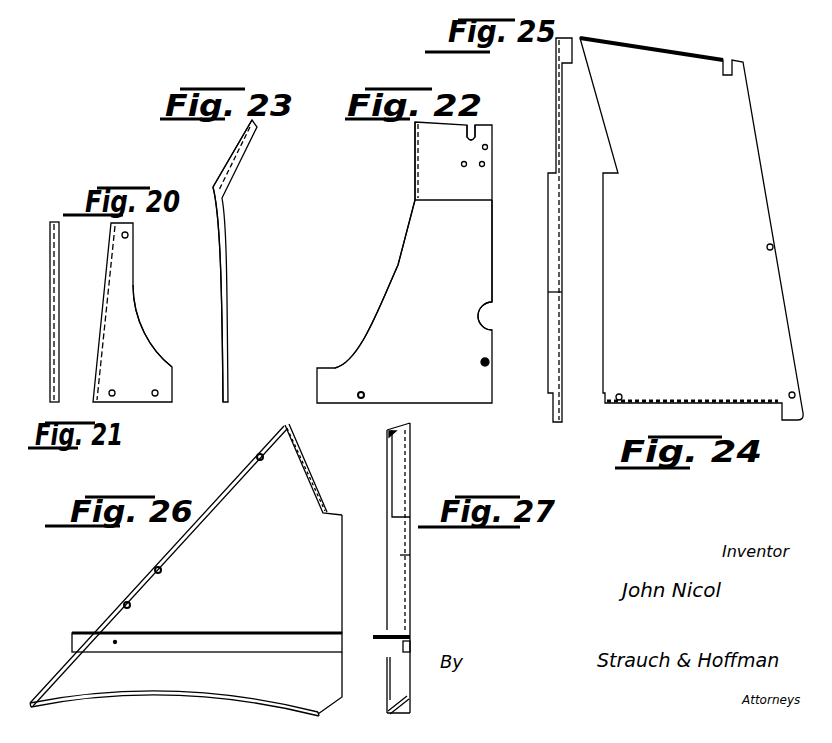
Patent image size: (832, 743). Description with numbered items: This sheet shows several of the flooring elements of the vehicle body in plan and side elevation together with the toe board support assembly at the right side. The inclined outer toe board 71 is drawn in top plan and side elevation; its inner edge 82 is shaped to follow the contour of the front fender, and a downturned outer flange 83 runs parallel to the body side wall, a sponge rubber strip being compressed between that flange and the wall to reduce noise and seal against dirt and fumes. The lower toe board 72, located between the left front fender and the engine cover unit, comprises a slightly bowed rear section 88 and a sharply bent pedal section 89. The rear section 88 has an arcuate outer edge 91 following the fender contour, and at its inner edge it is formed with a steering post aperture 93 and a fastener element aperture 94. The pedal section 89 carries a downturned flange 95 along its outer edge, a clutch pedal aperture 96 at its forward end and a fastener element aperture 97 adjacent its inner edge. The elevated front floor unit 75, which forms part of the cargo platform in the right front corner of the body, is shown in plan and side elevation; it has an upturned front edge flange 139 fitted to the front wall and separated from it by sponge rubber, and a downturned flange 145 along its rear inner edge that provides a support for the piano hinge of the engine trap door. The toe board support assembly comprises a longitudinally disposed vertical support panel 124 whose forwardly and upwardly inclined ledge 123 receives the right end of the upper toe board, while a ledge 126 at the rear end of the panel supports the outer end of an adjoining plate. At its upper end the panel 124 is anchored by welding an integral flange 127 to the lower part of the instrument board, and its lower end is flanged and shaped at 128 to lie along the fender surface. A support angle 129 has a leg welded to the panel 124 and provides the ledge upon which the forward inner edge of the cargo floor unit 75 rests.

In FIG. 20, the outer toe board 71 is at (128, 287).
In FIG. 23, the lower toe board 72 is at (230, 257).
In FIG. 22, the lower toe board 72 is at (439, 391).
In FIG. 24, the elevated front floor unit 75 is at (740, 136).
In FIG. 20, the inner edge 82 is at (147, 338).
In FIG. 21, the downturned outer flange 83 is at (50, 327).
In FIG. 23, the rear section 88 is at (230, 311).
In FIG. 22, the rear section 88 is at (482, 266).
In FIG. 23, the pedal section 89 is at (233, 178).
In FIG. 22, the pedal section 89 is at (480, 188).
In FIG. 22, the arcuate outer edge 91 is at (399, 262).
In FIG. 22, the steering post aperture 93 is at (484, 318).
In FIG. 22, the fastener element aperture 94 is at (489, 362).
In FIG. 23, the downturned flange 95 is at (236, 151).
In FIG. 22, the downturned flange 95 is at (413, 126).
In FIG. 22, the clutch pedal aperture 96 is at (474, 133).
In FIG. 22, the fastener element aperture 97 is at (490, 147).
In FIG. 26, the inclined ledge 123 is at (197, 523).
In FIG. 27, the inclined ledge 123 is at (400, 595).
In FIG. 26, the vertical support panel 124 is at (327, 572).
In FIG. 27, the vertical support panel 124 is at (410, 555).
In FIG. 26, the ledge 126 is at (60, 671).
In FIG. 27, the ledge 126 is at (397, 675).
In FIG. 26, the integral flange 127 is at (313, 482).
In FIG. 27, the integral flange 127 is at (393, 468).
In FIG. 26, the flanged lower end 128 is at (250, 698).
In FIG. 27, the flanged lower end 128 is at (392, 710).
In FIG. 26, the support angle 129 is at (322, 633).
In FIG. 27, the support angle 129 is at (385, 637).
In FIG. 25, the upturned front edge flange 139 is at (566, 40).
In FIG. 25, the downturned flange 145 is at (557, 292).